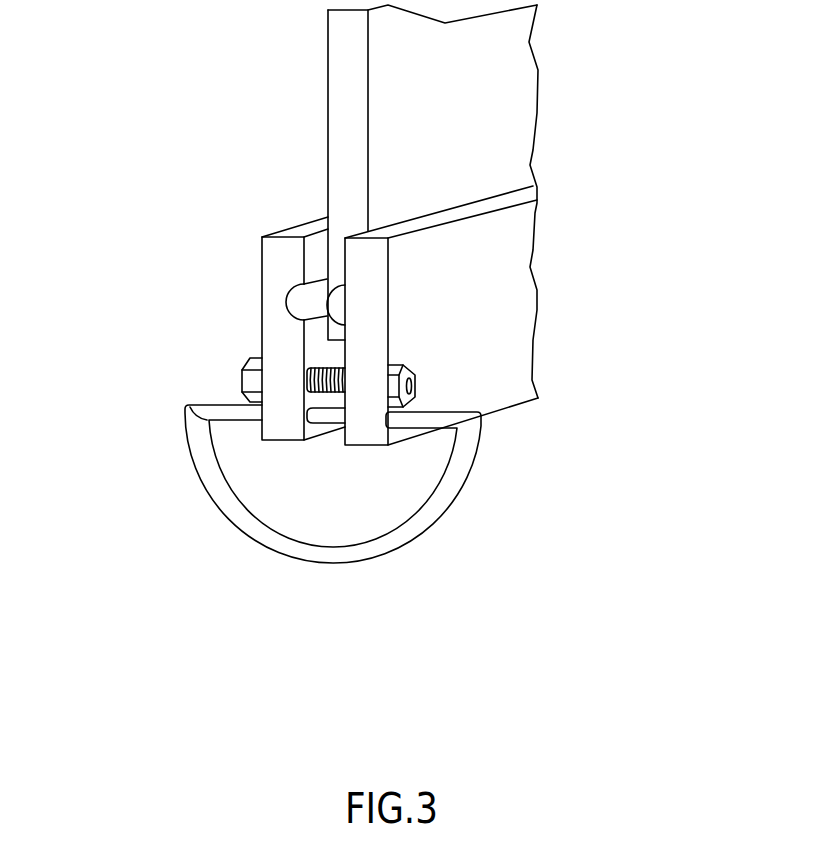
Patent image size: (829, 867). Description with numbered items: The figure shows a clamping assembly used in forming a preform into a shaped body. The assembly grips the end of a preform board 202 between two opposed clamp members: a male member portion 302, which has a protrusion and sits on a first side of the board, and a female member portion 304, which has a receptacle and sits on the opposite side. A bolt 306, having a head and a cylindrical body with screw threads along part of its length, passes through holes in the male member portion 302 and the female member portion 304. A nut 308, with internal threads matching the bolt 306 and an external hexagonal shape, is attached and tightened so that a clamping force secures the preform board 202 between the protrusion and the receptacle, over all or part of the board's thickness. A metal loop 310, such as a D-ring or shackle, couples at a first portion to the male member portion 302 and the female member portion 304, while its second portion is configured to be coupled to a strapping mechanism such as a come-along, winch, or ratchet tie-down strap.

The preform board 202 is at (505, 112).
The male member portion 302 is at (432, 243).
The female member portion 304 is at (277, 265).
The bolt 306 is at (243, 368).
The nut 308 is at (415, 370).
The metal loop 310 is at (473, 438).